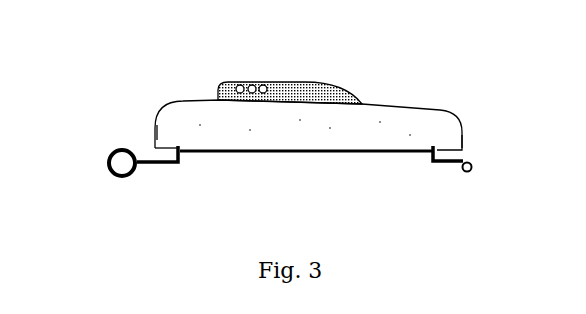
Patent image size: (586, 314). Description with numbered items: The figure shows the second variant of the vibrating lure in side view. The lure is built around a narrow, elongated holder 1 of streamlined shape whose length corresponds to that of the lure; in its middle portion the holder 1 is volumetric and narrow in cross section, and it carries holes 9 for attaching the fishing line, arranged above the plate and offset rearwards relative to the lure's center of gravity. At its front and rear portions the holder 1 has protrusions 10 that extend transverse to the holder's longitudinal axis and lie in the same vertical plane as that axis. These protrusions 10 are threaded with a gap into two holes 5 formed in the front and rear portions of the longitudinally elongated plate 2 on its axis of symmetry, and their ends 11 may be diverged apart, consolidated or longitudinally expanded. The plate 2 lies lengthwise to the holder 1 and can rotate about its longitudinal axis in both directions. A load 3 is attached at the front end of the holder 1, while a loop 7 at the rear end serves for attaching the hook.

The holder 1 is at (310, 90).
The longitudinally elongated plate 2 is at (343, 123).
The load 3 is at (118, 148).
The holes 5 is at (173, 148).
The loop 7 is at (470, 172).
The hole for the fishing line 9 is at (258, 82).
The protrusions 10 is at (182, 152).
The ends of protrusions 11 is at (158, 165).